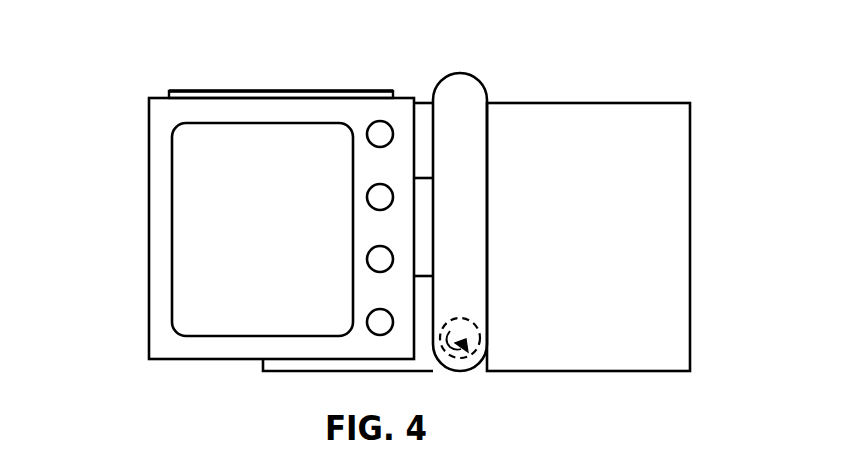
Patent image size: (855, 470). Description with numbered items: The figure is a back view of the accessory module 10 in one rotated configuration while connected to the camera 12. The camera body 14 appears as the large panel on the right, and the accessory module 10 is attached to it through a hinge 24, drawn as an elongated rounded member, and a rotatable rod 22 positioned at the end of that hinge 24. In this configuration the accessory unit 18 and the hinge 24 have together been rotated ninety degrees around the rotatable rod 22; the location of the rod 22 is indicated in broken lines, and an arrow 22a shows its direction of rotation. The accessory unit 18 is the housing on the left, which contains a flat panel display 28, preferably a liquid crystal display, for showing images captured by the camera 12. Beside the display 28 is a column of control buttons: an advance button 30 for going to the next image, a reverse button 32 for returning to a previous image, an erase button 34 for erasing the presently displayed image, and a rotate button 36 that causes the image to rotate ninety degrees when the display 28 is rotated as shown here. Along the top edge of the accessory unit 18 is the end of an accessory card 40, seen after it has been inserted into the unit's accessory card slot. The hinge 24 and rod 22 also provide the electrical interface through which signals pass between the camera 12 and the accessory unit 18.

The accessory module 10 is at (120, 217).
The camera 12 is at (528, 90).
The camera body 14 is at (690, 120).
The accessory unit 18 is at (149, 340).
The rotatable rod 22 is at (472, 372).
The arrow 22a is at (447, 337).
The hinge 24 is at (463, 217).
The flat panel display 28 is at (205, 336).
The advance button 30 is at (396, 227).
The reverse button 32 is at (396, 162).
The erase button 34 is at (392, 126).
The rotate button 36 is at (396, 289).
The accessory card 40 is at (300, 90).